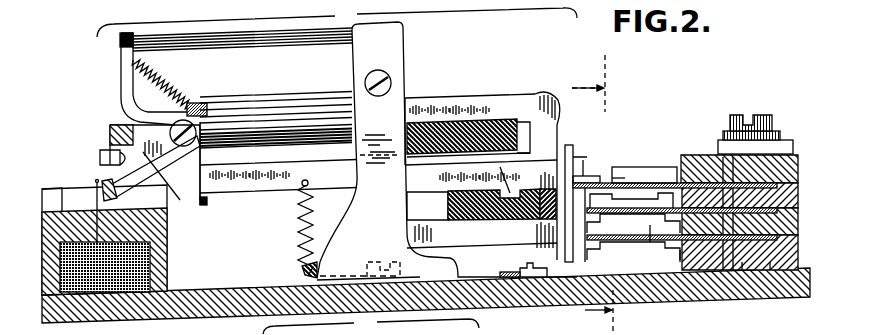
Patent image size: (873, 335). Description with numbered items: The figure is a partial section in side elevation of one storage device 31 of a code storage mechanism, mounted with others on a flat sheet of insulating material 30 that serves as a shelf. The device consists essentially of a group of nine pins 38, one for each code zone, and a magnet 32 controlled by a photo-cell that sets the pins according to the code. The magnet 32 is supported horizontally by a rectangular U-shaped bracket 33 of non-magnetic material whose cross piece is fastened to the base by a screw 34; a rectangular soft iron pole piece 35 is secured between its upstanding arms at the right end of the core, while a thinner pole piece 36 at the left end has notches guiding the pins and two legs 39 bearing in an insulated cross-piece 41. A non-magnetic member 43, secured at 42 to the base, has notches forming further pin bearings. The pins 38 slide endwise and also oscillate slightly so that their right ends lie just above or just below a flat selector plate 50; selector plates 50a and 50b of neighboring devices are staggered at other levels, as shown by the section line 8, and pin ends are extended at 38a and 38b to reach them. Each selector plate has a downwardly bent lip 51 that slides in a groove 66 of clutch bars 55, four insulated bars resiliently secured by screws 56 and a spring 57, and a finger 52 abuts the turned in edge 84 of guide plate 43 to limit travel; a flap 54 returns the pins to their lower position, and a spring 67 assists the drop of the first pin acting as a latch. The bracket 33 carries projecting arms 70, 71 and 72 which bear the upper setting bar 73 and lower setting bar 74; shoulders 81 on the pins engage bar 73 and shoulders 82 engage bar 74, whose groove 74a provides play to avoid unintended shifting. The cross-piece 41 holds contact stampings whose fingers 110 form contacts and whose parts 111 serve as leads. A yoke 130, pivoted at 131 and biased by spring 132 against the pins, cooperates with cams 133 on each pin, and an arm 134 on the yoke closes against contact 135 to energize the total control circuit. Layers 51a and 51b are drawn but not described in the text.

The section line 8 is at (592, 193).
The flat sheet of insulating material 30 is at (238, 294).
The storage device 31 is at (337, 169).
The magnet 32 is at (242, 116).
The rectangular U-shaped bracket 33 is at (439, 227).
The screw 34 is at (370, 262).
The soft iron pole piece 35 is at (404, 31).
The thinner soft iron pole piece 36 is at (121, 63).
The pins 38 is at (280, 190).
The extended pin end 38a is at (682, 227).
The extended pin end 38b is at (633, 258).
The legs 39 is at (208, 205).
The insulated cross-piece 41 is at (168, 249).
The securing point 42 is at (519, 267).
The member of non-magnetic material 43 is at (576, 316).
The selector plate 50 is at (627, 182).
The selector plate 50a is at (660, 182).
The selector plate 50b is at (652, 225).
The lip 51 is at (798, 196).
The insulating layer 51a is at (770, 270).
The insulating layer 51b is at (742, 270).
The finger 52 is at (581, 176).
The flap 54 is at (619, 181).
The clutch bars 55 is at (797, 157).
The screws 56 is at (736, 115).
The spring 57 is at (775, 140).
The groove 66 is at (680, 253).
The spring 67 is at (298, 235).
The projecting arm 70 is at (470, 108).
The projecting arm 71 is at (528, 153).
The projecting arm 72 is at (482, 219).
The upper setting bar 73 is at (425, 125).
The lower setting bar 74 is at (434, 209).
The groove 74a is at (500, 167).
The shoulder 81 is at (549, 110).
The shoulder 82 is at (527, 201).
The turned in edge 84 is at (589, 177).
The contacts 110 is at (64, 204).
The lead part of stamping 111 is at (152, 276).
The yoke 130 is at (113, 136).
The pivot 131 is at (127, 112).
The spring 132 is at (147, 78).
The cams 133 is at (110, 153).
The arm 134 is at (178, 192).
The contact 135 is at (96, 182).